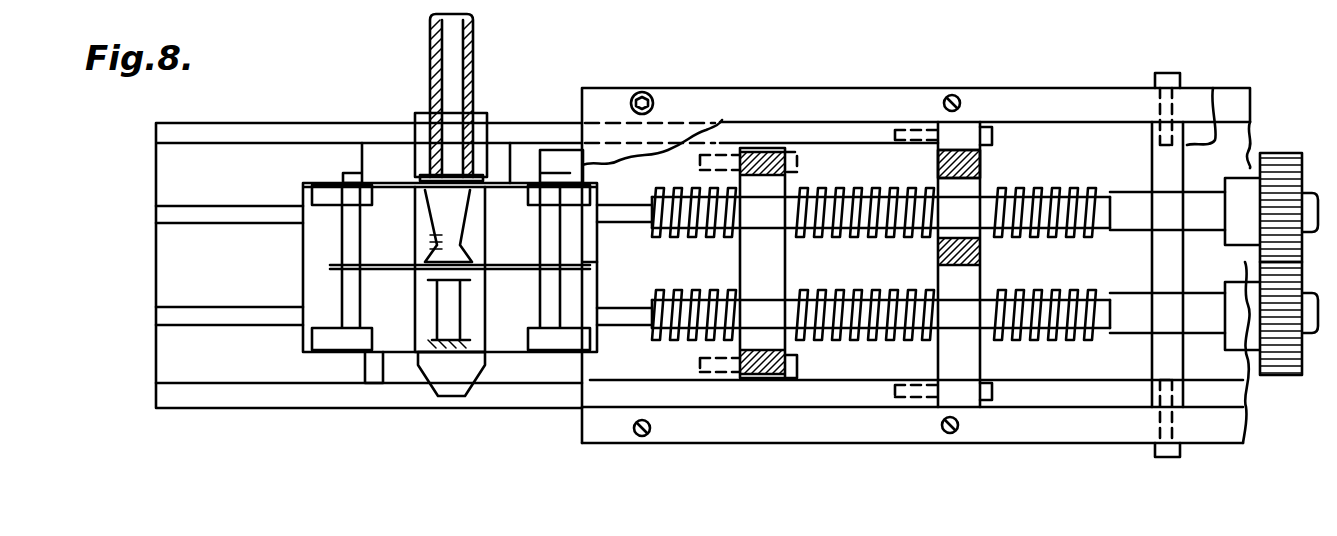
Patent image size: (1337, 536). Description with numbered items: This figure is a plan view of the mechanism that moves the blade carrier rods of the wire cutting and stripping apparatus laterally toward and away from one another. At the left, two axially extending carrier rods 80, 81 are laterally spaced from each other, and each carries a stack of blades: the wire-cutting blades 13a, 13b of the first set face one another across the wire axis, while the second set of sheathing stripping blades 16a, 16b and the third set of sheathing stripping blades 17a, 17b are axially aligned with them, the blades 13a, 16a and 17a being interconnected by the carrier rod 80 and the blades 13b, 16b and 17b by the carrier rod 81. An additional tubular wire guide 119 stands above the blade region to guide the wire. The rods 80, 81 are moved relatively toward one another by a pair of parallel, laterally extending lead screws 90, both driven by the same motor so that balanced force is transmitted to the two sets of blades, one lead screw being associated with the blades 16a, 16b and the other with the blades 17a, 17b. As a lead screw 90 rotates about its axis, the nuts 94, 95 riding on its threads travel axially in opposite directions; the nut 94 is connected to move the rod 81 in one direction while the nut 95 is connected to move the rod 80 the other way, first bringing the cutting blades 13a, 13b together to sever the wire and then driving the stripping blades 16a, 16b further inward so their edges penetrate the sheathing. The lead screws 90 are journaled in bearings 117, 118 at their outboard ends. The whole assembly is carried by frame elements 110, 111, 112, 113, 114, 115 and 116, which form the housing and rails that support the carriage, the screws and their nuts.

The frame element 113 is at (233, 132).
The frame element 114 is at (188, 397).
The carrier rod 80 is at (350, 243).
The carrier rod 81 is at (582, 289).
The sheathing stripping blade 17a is at (388, 183).
The sheathing stripping blade 17b is at (505, 183).
The wire-cutting blade 13a is at (340, 266).
The wire-cutting blade 13b is at (590, 264).
The sheathing stripping blade 16a is at (382, 362).
The sheathing stripping blade 16b is at (512, 362).
The tubular wire guide 119 is at (477, 40).
The frame element 110 is at (676, 95).
The frame element 111 is at (836, 100).
The frame element 112 is at (756, 428).
The lead screw 90 is at (893, 240).
The nut 94 is at (772, 224).
The nut 95 is at (970, 329).
The frame element 116 is at (980, 160).
The frame element 115 is at (1212, 88).
The bearing 117 is at (1158, 180).
The bearing 118 is at (1160, 346).